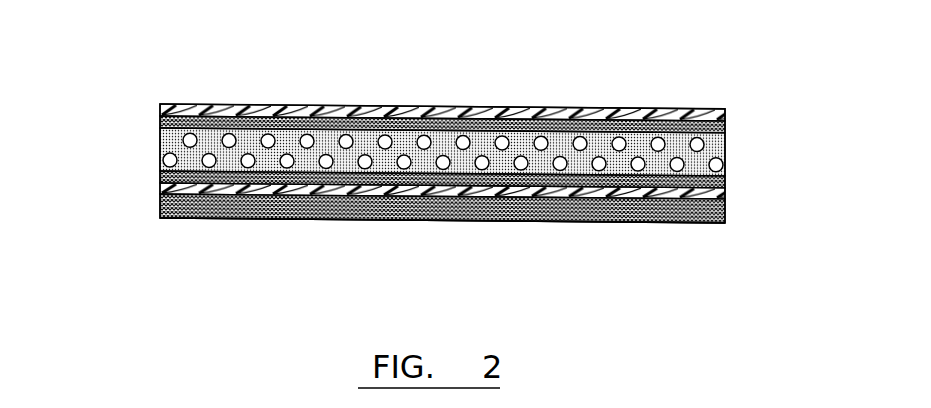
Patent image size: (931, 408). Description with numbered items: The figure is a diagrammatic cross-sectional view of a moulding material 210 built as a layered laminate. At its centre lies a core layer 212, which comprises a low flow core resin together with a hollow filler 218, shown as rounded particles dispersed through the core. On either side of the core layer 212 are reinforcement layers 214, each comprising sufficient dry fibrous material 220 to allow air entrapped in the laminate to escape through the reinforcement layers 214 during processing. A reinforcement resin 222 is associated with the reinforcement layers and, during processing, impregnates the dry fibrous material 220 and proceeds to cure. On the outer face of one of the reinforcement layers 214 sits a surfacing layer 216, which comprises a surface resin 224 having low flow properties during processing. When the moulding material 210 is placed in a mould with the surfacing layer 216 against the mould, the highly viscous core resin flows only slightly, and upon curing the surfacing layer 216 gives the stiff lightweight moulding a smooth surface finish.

The moulding material 210 is at (535, 100).
The core layer 212 is at (730, 143).
The reinforcement layers 214 is at (730, 113).
The surfacing layer 216 is at (668, 227).
The hollow filler 218 is at (727, 163).
The dry fibrous material 220 is at (160, 109).
The reinforcement resin 222 is at (160, 123).
The surface resin 224 is at (200, 219).